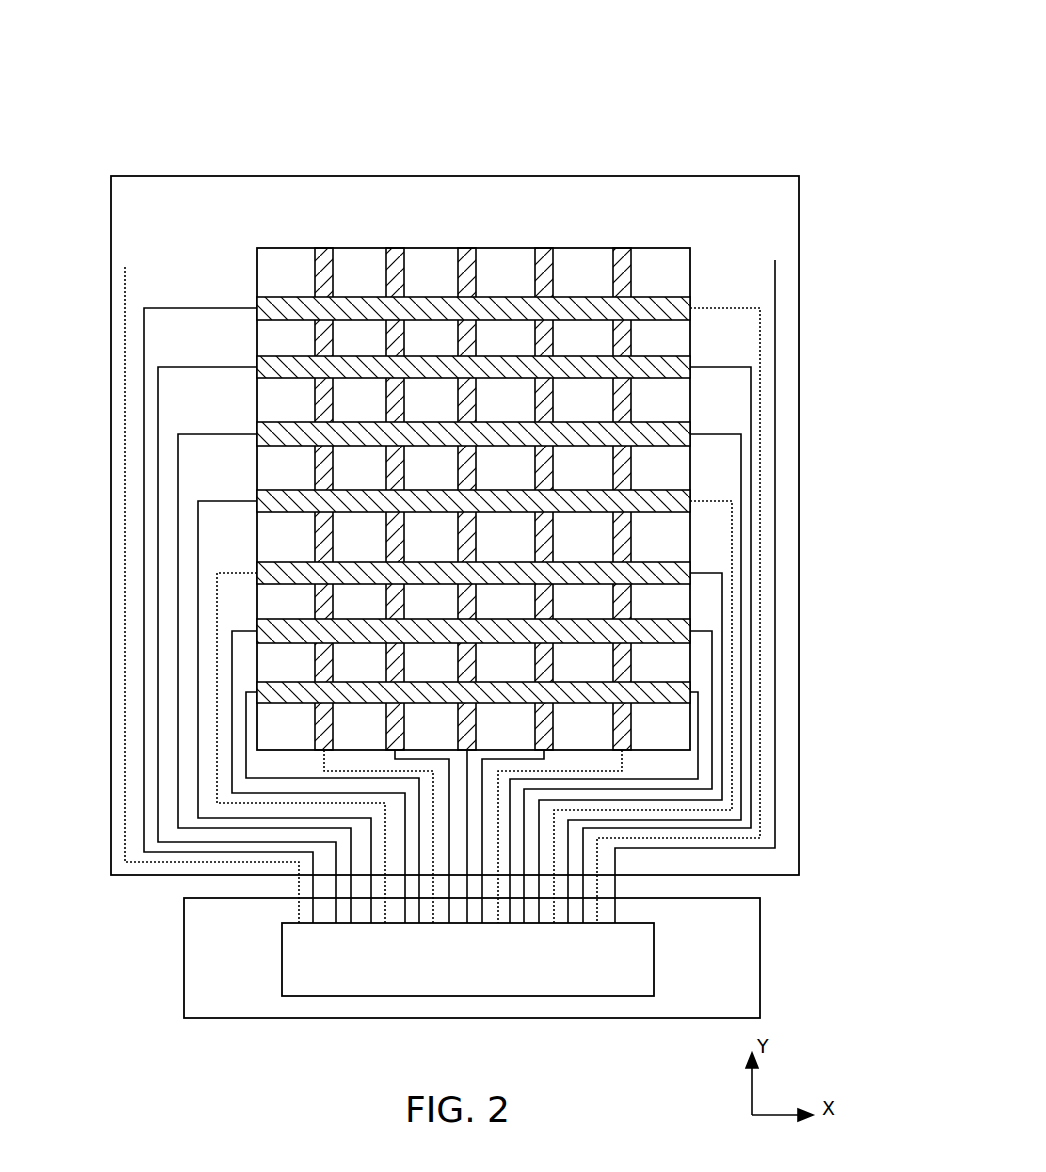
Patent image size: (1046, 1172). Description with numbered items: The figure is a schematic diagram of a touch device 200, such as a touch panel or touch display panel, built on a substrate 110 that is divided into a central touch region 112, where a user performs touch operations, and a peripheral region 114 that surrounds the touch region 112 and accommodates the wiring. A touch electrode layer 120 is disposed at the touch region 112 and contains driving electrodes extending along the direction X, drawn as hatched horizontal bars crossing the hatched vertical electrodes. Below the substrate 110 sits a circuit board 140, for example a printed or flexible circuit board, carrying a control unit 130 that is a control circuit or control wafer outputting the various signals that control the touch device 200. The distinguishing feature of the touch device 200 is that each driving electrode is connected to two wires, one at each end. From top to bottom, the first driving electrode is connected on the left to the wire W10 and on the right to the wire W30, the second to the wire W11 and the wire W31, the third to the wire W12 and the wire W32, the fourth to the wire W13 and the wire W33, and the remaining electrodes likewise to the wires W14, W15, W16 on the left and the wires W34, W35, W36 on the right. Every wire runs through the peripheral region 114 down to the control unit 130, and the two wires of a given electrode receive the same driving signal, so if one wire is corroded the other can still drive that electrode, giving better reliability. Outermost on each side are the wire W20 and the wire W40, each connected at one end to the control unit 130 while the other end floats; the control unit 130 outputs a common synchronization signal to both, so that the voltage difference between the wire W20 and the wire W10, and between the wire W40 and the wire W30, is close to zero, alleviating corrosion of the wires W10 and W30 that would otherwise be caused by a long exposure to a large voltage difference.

The touch device 200 is at (800, 43).
The substrate 110 is at (473, 410).
The touch region 112 is at (493, 272).
The peripheral region 114 is at (590, 220).
The touch electrode layer 120 is at (285, 307).
The control unit 130 is at (655, 947).
The circuit board 140 is at (755, 932).
The wire W20 is at (125, 338).
The wire W10 is at (144, 407).
The wire W11 is at (158, 463).
The wire W12 is at (178, 543).
The wire W13 is at (198, 628).
The wire W14 is at (217, 683).
The wire W15 is at (232, 735).
The wire W16 is at (246, 775).
The wire W40 is at (775, 316).
The wire W30 is at (760, 373).
The wire W31 is at (751, 433).
The wire W32 is at (741, 514).
The wire W33 is at (732, 600).
The wire W34 is at (722, 657).
The wire W35 is at (712, 709).
The wire W36 is at (698, 745).